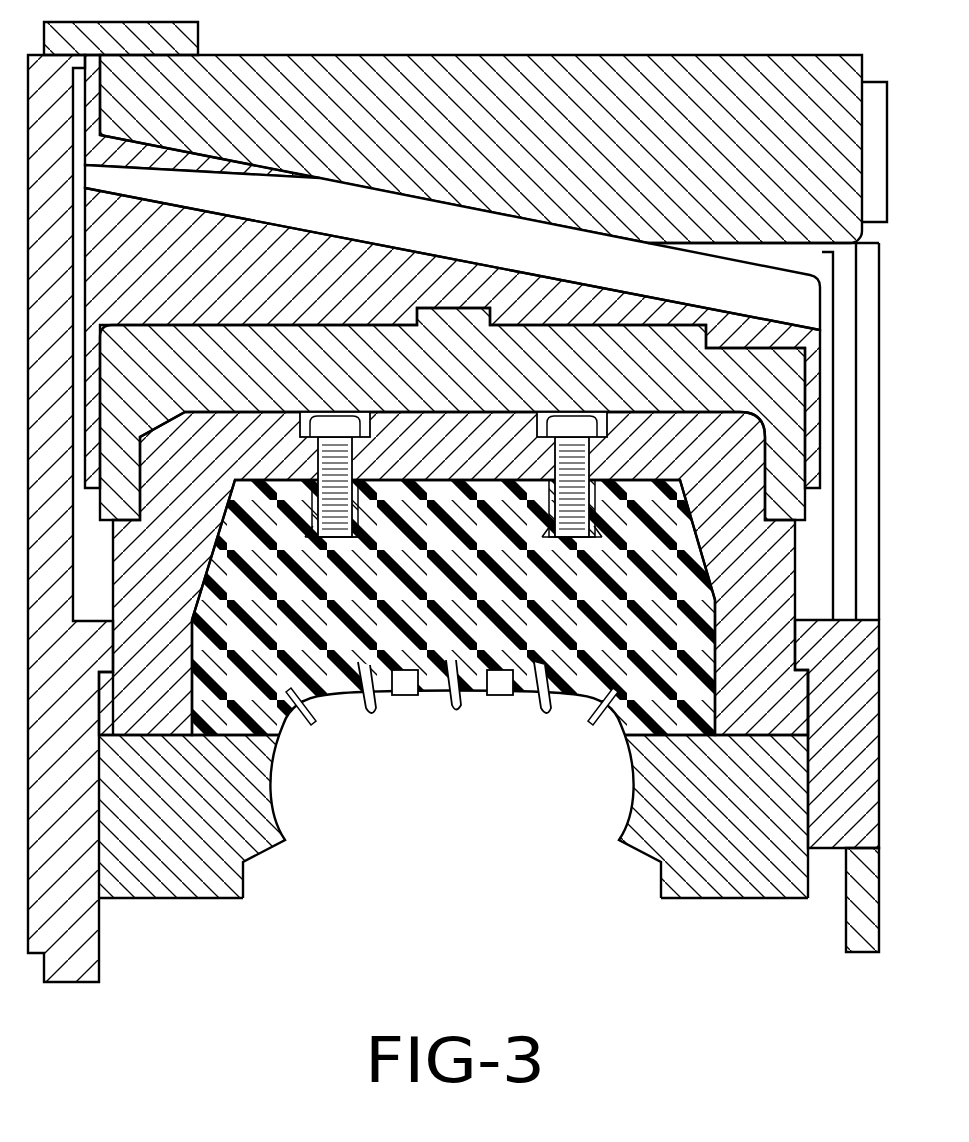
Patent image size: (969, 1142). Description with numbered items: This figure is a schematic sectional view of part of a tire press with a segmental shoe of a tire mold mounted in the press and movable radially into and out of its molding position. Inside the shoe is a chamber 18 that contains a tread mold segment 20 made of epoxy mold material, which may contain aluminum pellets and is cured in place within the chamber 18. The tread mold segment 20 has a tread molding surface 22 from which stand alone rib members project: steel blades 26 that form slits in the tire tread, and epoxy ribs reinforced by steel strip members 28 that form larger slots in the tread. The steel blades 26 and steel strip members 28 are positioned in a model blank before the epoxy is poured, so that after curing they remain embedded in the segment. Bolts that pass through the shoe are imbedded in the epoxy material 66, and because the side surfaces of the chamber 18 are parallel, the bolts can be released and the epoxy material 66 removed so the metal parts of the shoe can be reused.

The chamber 18 is at (240, 725).
The tread mold segment 20 is at (587, 688).
The tread molding surface 22 is at (320, 697).
The steel blades 26 is at (313, 724).
The steel strip members 28 is at (366, 712).
The epoxy material 66 is at (672, 737).